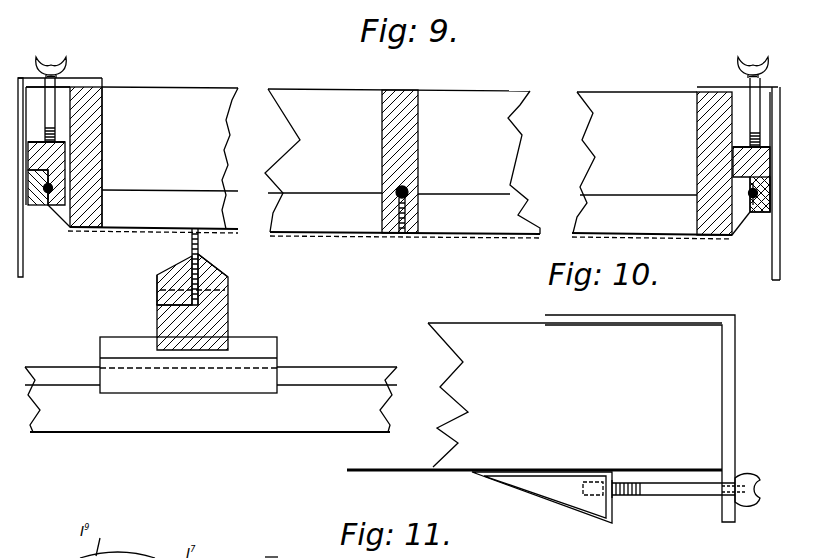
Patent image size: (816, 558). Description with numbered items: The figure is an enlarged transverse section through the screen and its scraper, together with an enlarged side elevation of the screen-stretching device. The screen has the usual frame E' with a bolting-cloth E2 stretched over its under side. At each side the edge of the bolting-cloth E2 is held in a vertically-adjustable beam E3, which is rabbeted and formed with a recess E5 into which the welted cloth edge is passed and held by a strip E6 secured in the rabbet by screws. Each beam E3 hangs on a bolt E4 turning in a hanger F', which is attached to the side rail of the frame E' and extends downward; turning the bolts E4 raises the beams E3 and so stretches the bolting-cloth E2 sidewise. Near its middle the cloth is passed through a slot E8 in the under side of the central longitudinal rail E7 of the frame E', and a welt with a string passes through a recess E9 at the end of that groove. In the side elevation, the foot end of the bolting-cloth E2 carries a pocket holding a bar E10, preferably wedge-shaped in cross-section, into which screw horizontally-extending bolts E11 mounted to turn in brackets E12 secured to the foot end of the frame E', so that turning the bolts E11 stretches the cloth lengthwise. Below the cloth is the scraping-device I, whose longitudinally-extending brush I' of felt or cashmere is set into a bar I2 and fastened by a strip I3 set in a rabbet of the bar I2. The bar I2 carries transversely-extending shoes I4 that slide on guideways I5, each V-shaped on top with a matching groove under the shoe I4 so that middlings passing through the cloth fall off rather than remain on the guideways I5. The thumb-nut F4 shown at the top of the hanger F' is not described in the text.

In FIG. 9, the frame E' is at (100, 152).
In FIG. 10, the frame E' is at (534, 396).
In FIG. 9, the bolting-cloth E2 is at (307, 234).
In FIG. 9, the vertically-adjustable beam E3 is at (50, 152).
In FIG. 9, the bolt E4 is at (46, 110).
In FIG. 9, the recess E5 is at (33, 197).
In FIG. 9, the strip E6 is at (43, 188).
In FIG. 9, the central longitudinal rail E7 is at (407, 173).
In FIG. 9, the slot E8 is at (397, 213).
In FIG. 9, the recess E9 is at (383, 190).
In FIG. 10, the bar E10 is at (550, 488).
In FIG. 10, the horizontally-extending bolt E11 is at (686, 500).
In FIG. 10, the bracket E12 is at (728, 430).
In FIG. 9, the hanger F' is at (60, 177).
In FIG. 9, the thumb screw F4 is at (51, 67).
In FIG. 9, the scraping-device I is at (203, 302).
In FIG. 9, the brush I' is at (174, 267).
In FIG. 9, the longitudinally-extending bar I2 is at (207, 268).
In FIG. 9, the strip I3 is at (157, 277).
In FIG. 9, the shoe I4 is at (128, 323).
In FIG. 9, the guideway I5 is at (352, 377).